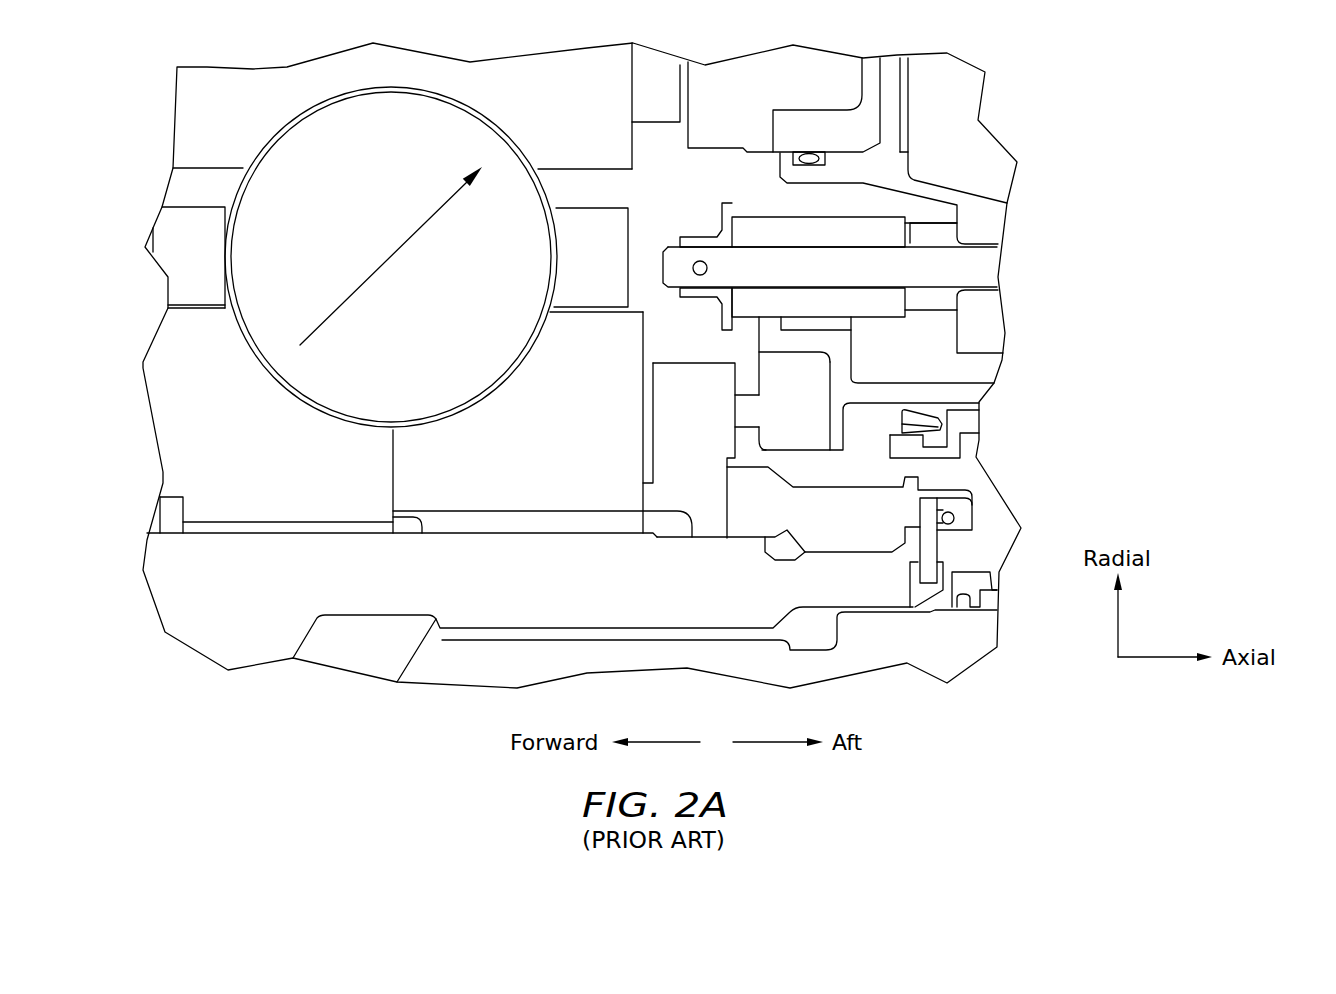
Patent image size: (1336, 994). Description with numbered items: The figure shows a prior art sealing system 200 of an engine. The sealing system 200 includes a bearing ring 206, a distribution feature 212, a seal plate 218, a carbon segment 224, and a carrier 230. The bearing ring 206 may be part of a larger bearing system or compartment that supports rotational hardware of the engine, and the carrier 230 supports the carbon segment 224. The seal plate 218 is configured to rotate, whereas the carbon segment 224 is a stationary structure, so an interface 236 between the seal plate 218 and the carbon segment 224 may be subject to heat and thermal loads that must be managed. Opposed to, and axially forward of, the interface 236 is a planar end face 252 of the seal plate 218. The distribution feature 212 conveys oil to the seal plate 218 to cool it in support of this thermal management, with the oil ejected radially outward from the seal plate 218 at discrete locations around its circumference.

The prior art sealing system 200 is at (1108, 152).
The bearing ring 206 is at (490, 472).
The distribution feature 212 is at (550, 520).
The seal plate 218 is at (710, 477).
The carbon segment 224 is at (807, 395).
The carrier 230 is at (833, 345).
The interface 236 is at (738, 410).
The planar end face 252 is at (643, 435).